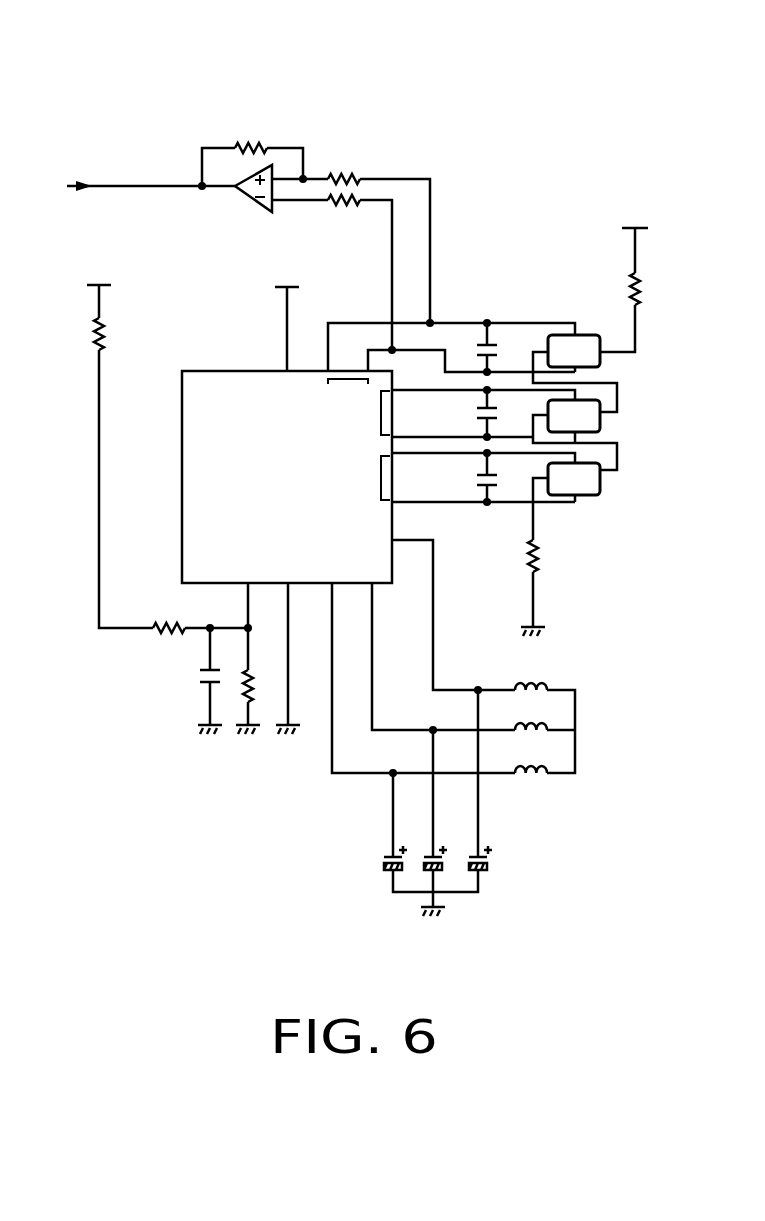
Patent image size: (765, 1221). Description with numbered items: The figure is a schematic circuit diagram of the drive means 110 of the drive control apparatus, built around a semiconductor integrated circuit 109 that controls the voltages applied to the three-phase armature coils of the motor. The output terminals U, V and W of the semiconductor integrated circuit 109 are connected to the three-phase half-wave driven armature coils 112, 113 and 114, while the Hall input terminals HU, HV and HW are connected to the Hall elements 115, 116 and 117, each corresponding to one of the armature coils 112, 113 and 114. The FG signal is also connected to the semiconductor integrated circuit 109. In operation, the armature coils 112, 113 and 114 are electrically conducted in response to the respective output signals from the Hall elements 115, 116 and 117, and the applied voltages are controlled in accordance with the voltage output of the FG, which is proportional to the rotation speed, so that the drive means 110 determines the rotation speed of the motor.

The semiconductor integrated circuit (IC2) 109 is at (221, 371).
The drive means 110 is at (113, 84).
The armature coil (U) 112 is at (548, 688).
The armature coil (V) 113 is at (548, 730).
The armature coil (W) 114 is at (548, 772).
The Hall element (HU) 115 is at (578, 334).
The Hall element (HV) 116 is at (617, 410).
The Hall element (HW) 117 is at (617, 470).